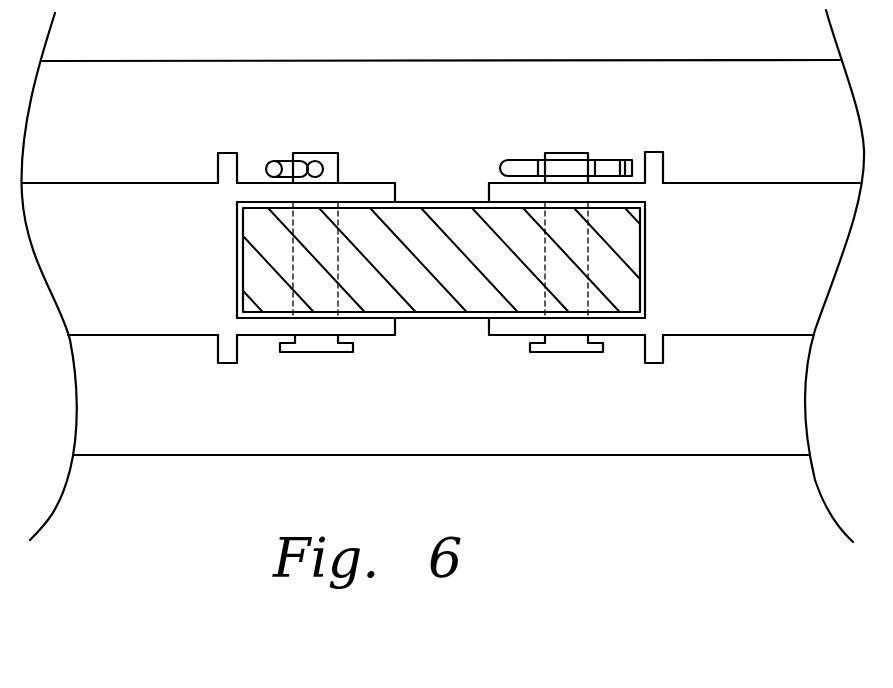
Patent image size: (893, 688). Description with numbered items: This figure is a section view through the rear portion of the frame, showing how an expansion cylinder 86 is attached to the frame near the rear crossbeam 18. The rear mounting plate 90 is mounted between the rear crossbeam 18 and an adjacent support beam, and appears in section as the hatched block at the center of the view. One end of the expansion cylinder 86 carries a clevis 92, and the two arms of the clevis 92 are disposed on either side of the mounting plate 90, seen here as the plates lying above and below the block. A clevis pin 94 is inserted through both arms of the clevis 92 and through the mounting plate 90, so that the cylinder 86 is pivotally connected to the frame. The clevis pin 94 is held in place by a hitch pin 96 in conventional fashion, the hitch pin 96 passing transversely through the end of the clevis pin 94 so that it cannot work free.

The rear crossbeam 18 is at (218, 62).
The expansion cylinder 86 is at (177, 182).
The rear mounting plate 90 is at (433, 318).
The clevis 92 is at (493, 183).
The clevis pin 94 is at (305, 153).
The hitch pin 96 is at (282, 160).